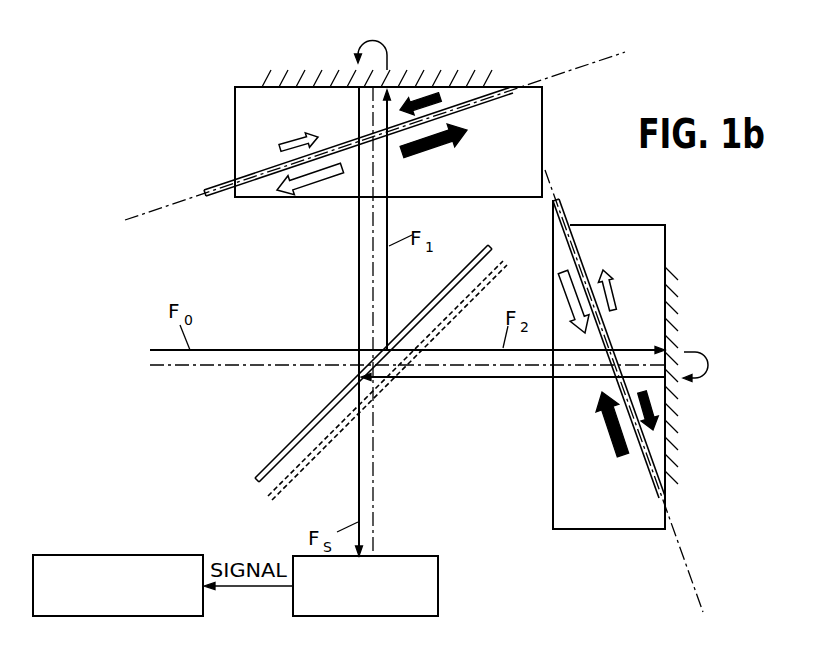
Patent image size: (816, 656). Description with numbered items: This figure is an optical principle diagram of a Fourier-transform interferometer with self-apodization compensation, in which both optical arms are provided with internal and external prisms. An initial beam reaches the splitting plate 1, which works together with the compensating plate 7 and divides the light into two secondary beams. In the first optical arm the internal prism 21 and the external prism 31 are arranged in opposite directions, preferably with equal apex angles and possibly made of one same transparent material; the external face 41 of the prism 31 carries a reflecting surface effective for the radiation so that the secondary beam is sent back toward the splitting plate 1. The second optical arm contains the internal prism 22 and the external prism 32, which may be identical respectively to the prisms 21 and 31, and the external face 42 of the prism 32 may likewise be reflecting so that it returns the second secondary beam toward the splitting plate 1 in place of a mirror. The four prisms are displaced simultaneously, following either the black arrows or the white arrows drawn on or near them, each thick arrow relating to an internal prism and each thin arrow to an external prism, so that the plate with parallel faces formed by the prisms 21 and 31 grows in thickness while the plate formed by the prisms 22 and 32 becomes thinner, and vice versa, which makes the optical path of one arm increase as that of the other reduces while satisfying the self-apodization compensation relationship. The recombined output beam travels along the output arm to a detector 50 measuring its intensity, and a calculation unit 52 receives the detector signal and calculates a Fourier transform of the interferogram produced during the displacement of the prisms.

The splitting plate 1 is at (272, 462).
The compensating plate 7 is at (287, 487).
The internal prism of the first optical arm 21 is at (258, 200).
The external prism of the first optical arm 31 is at (235, 105).
The external face of the prism 31 41 is at (290, 82).
The internal prism of the second optical arm 22 is at (582, 530).
The external prism of the second optical arm 32 is at (645, 223).
The external face of the prism 32 42 is at (678, 293).
The detector 50 is at (438, 557).
The calculation unit 52 is at (120, 553).